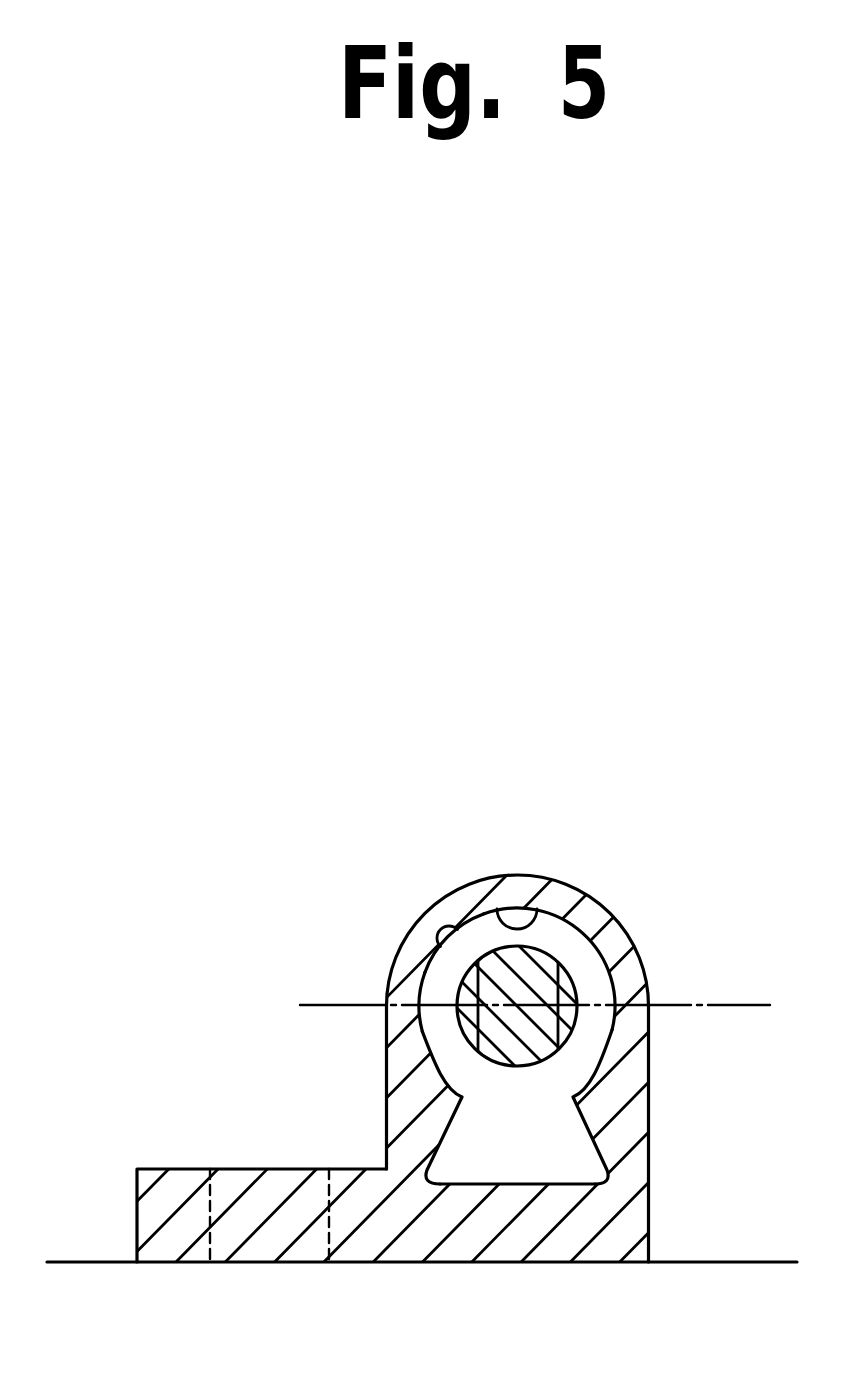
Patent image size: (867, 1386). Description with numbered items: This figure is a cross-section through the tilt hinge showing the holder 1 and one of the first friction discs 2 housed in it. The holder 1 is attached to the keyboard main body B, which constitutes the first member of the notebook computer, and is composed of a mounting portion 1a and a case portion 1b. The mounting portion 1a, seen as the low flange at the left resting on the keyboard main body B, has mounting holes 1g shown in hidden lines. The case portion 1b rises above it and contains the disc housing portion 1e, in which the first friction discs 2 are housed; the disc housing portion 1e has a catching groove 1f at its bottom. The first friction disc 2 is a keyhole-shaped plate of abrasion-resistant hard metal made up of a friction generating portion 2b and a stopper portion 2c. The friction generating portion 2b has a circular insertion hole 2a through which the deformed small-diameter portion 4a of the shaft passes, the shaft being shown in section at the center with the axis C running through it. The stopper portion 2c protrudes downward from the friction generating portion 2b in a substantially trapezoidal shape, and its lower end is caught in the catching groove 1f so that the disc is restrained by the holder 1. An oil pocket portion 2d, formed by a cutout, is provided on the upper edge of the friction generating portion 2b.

The holder 1 is at (472, 1044).
The mounting portion 1a is at (248, 1168).
The case portion 1b is at (497, 877).
The disc housing portion 1e is at (441, 948).
The catching groove 1f is at (533, 1168).
The mounting hole 1g is at (212, 1243).
The first friction disc 2 is at (517, 1055).
The circular insertion hole 2a is at (465, 1018).
The friction generating portion 2b is at (478, 932).
The stopper portion 2c is at (495, 1142).
The oil pocket portion 2d is at (527, 923).
The deformed small-diameter portion 4a is at (542, 983).
The keyboard main body B is at (727, 1262).
The axis C is at (734, 1004).